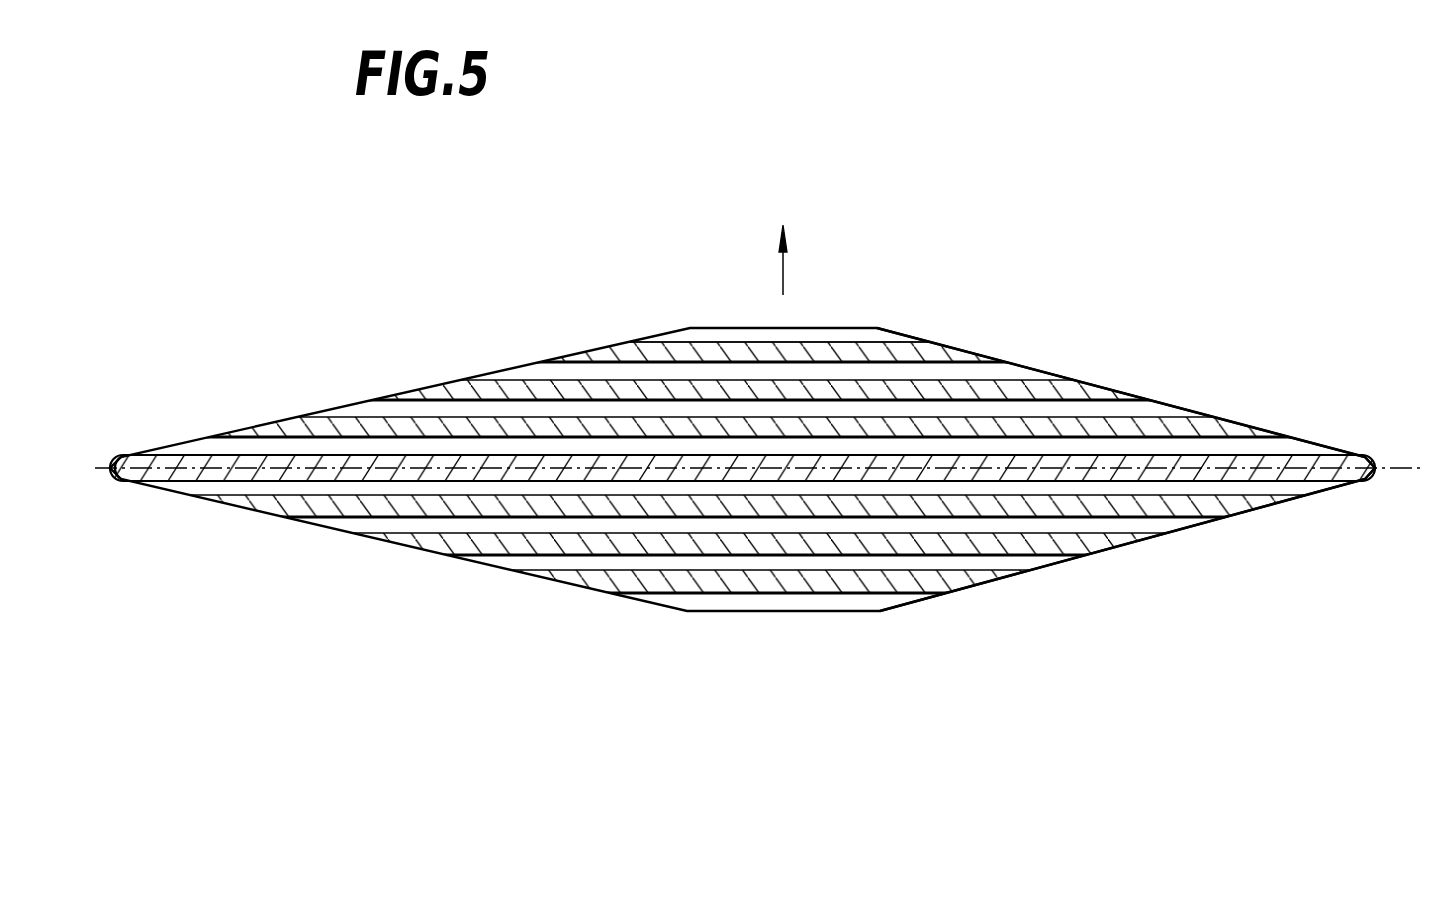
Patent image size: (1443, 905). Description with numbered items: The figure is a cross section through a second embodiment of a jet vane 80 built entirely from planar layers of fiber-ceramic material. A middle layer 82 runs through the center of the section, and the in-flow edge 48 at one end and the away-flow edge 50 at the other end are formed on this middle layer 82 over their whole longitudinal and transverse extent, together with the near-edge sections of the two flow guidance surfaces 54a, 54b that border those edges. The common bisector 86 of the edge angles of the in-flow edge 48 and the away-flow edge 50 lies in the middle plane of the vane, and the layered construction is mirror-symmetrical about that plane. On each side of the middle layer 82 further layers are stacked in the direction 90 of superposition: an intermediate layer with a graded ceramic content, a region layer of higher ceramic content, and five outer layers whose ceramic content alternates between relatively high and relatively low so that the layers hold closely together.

The in-flow edge 48 is at (1377, 472).
The away-flow edge 50 is at (106, 463).
The flow guidance surface 54a is at (1105, 383).
The flow guidance surface 54b is at (1130, 543).
The jet vane 80 is at (1003, 294).
The middle layer 82 is at (188, 473).
The common bisector 86 is at (1413, 468).
The direction of superposition 90 is at (783, 275).